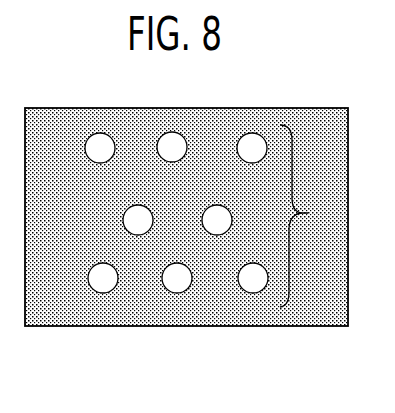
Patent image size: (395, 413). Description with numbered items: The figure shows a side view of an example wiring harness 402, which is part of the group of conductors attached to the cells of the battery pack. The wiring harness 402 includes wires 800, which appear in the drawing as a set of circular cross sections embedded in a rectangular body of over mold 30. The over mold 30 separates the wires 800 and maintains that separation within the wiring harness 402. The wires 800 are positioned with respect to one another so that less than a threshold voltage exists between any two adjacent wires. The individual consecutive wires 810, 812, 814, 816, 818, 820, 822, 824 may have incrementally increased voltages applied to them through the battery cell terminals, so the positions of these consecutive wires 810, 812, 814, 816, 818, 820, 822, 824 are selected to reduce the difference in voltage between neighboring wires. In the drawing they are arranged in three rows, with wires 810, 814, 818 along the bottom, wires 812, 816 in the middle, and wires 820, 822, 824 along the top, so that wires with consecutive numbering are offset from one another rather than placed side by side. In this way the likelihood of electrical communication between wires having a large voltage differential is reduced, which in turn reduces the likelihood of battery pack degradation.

The over mold 30 is at (325, 305).
The wiring harness 402 is at (84, 108).
The wires 800 is at (310, 216).
The wire 810 is at (255, 293).
The wire 812 is at (219, 235).
The wire 814 is at (178, 293).
The wire 816 is at (140, 235).
The wire 818 is at (104, 293).
The wire 820 is at (254, 163).
The wire 822 is at (174, 162).
The wire 824 is at (102, 163).